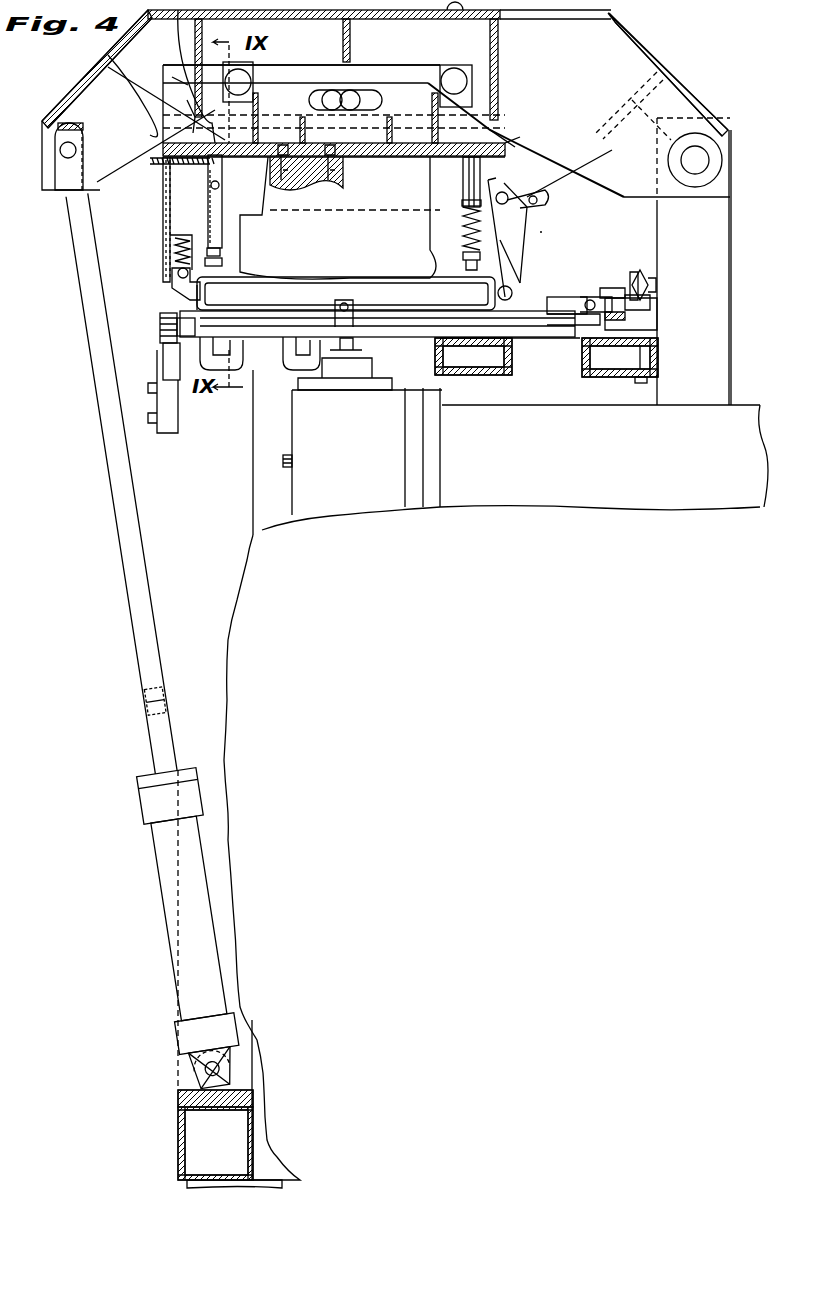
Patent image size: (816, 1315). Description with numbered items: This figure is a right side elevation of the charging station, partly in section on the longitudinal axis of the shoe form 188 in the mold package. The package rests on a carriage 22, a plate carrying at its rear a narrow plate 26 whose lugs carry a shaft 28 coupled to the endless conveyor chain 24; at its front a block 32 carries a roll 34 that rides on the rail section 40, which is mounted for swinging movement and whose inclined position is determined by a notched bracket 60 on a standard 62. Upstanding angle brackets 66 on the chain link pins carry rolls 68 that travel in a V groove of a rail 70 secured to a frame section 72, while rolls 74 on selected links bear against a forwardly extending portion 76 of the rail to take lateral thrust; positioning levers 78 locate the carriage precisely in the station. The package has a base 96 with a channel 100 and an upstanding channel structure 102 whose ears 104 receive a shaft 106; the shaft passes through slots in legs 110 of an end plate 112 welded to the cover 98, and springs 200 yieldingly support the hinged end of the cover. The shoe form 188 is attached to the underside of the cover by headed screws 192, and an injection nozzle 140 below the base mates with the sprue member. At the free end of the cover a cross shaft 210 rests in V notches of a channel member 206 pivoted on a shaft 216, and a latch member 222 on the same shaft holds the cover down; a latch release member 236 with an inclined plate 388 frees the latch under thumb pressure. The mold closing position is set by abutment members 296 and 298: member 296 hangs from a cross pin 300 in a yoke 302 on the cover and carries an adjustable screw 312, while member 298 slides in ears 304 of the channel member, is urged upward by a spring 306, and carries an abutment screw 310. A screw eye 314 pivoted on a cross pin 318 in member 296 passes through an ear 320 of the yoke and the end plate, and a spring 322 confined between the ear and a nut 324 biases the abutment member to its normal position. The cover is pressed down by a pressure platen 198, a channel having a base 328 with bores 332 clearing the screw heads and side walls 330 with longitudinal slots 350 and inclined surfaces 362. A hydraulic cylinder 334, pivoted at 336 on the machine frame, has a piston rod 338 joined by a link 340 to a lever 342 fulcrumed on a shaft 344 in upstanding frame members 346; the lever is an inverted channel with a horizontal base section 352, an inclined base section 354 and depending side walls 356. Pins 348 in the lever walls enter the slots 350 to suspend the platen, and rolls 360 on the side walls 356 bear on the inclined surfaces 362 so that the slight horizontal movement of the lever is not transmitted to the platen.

The carriage 22 is at (530, 340).
The endless chain 24 is at (618, 277).
The narrow plate 26 is at (568, 285).
The shaft 28 is at (591, 298).
The block 32 is at (186, 337).
The roll 34 is at (158, 328).
The rail section 40 is at (172, 382).
The bracket 60 is at (172, 420).
The standard 62 is at (185, 495).
The angle brackets 66 is at (633, 272).
The roll 68 is at (650, 282).
The rail 70 is at (650, 315).
The frame section 72 is at (610, 378).
The rolls 74 is at (618, 320).
The forwardly extending portion 76 is at (640, 300).
The positioning levers 78 is at (340, 300).
The base 96 is at (410, 340).
The cover 98 is at (404, 165).
The channel 100 is at (470, 298).
The channel structure 102 is at (217, 296).
The ears 104 is at (172, 285).
The shaft 106 is at (178, 272).
The legs 110 is at (170, 238).
The end plate 112 is at (162, 196).
The injection nozzle 140 is at (330, 348).
The shoe form 188 is at (352, 245).
The headed screws 192 is at (285, 185).
The pressure platen 198 is at (513, 131).
The springs 200 is at (174, 250).
The channel member 206 is at (500, 245).
The cross shaft 210 is at (507, 196).
The shaft 216 is at (512, 296).
The latch member 222 is at (548, 226).
The latch release member 236 is at (575, 168).
The abutment member 296 is at (207, 220).
The abutment member 298 is at (462, 172).
The cross pin 300 is at (208, 205).
The yoke 302 is at (207, 186).
The ears 304 is at (460, 203).
The spring 306 is at (462, 225).
The headed abutment screw 310 is at (512, 268).
The abutment screw 312 is at (222, 258).
The screw eye 314 is at (160, 160).
The cross pin 318 is at (168, 79).
The ear 320 is at (165, 188).
The spring 322 is at (175, 113).
The nut 324 is at (150, 138).
The base 328 is at (500, 118).
The side walls 330 is at (408, 88).
The bores 332 is at (280, 140).
The hydraulic cylinder 334 is at (152, 858).
The pivotal mounting 336 is at (210, 1070).
The piston rod 338 is at (148, 745).
The link 340 is at (118, 500).
The lever 342 is at (73, 57).
The shaft 344 is at (700, 160).
The upstanding members 346 is at (720, 275).
The pins 348 is at (351, 95).
The longitudinal slots 350 is at (330, 92).
The base section 352 is at (494, 25).
The base section 354 is at (690, 85).
The side walls 356 is at (615, 50).
The rolls 360 is at (238, 69).
The inclined surfaces 362 is at (187, 70).
The inclined plate 388 is at (545, 198).